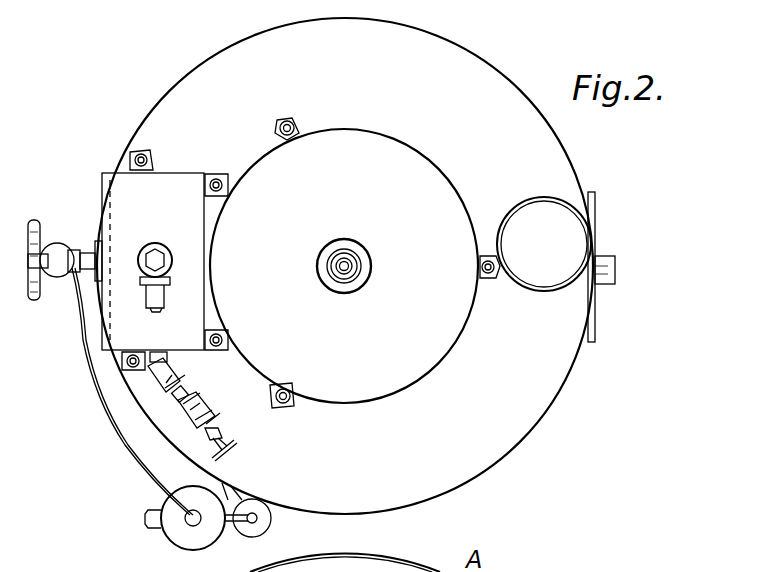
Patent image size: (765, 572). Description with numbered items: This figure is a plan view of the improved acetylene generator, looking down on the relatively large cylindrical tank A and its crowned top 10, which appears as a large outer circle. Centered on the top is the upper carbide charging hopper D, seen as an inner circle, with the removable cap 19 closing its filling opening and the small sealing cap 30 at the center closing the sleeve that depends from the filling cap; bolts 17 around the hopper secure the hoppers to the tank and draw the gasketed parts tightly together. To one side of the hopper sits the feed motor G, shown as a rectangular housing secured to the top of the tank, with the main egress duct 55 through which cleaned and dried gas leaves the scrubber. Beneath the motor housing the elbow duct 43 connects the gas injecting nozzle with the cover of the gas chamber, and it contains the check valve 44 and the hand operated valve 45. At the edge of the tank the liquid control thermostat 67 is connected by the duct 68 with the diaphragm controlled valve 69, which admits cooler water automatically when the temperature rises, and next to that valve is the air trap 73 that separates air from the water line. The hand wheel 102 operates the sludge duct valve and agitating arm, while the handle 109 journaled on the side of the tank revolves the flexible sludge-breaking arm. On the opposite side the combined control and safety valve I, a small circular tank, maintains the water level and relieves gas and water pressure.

The crowned top 10 is at (499, 339).
The bolts 17 is at (300, 124).
The removable cap 19 is at (372, 259).
The sealing cap 30 is at (335, 266).
The elbow duct 43 is at (206, 410).
The check valve 44 is at (186, 390).
The hand operated valve 45 is at (236, 448).
The main egress duct 55 is at (150, 288).
The liquid control thermostat 67 is at (88, 250).
The duct 68 is at (108, 405).
The diaphragm controlled valve 69 is at (172, 530).
The air trap 73 is at (262, 526).
The hand wheel 102 is at (34, 300).
The handle 109 is at (50, 246).
The cylindrical tank A is at (468, 52).
The carbide charging hopper D is at (344, 266).
The feed motor G is at (153, 261).
The combined control and safety valve I is at (530, 194).